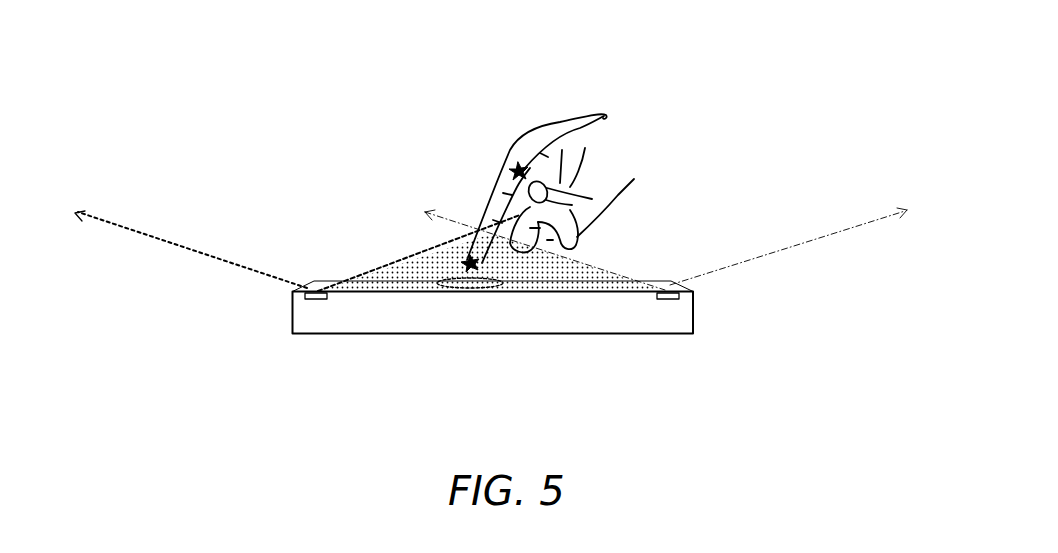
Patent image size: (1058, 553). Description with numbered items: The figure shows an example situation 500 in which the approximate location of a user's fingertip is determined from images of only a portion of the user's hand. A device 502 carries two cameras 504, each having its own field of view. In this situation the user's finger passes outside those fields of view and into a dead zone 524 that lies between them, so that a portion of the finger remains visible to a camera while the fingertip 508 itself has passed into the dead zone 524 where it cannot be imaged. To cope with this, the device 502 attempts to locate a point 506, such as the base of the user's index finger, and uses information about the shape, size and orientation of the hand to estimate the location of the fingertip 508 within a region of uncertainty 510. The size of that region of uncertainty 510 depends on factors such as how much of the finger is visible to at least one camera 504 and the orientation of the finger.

The example situation 500 is at (827, 122).
The device 502 is at (694, 325).
The cameras 504 is at (322, 291).
The point 506 is at (517, 172).
The fingertip 508 is at (465, 265).
The region of uncertainty 510 is at (470, 290).
The dead zone 524 is at (554, 268).